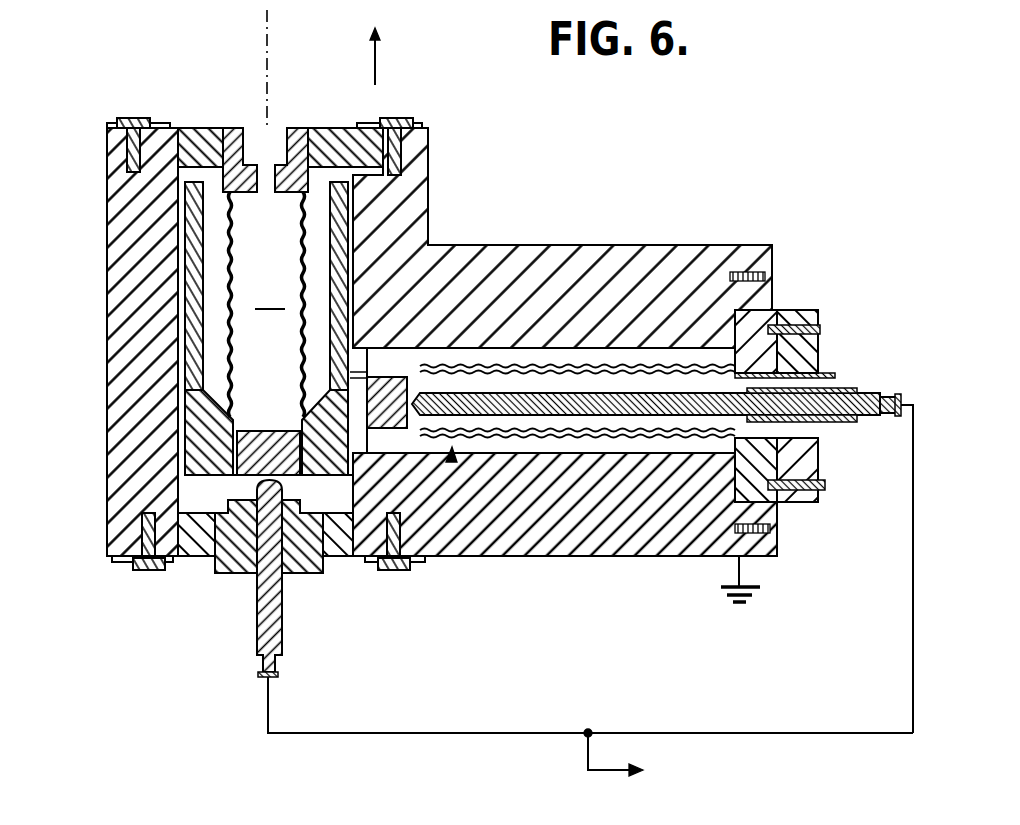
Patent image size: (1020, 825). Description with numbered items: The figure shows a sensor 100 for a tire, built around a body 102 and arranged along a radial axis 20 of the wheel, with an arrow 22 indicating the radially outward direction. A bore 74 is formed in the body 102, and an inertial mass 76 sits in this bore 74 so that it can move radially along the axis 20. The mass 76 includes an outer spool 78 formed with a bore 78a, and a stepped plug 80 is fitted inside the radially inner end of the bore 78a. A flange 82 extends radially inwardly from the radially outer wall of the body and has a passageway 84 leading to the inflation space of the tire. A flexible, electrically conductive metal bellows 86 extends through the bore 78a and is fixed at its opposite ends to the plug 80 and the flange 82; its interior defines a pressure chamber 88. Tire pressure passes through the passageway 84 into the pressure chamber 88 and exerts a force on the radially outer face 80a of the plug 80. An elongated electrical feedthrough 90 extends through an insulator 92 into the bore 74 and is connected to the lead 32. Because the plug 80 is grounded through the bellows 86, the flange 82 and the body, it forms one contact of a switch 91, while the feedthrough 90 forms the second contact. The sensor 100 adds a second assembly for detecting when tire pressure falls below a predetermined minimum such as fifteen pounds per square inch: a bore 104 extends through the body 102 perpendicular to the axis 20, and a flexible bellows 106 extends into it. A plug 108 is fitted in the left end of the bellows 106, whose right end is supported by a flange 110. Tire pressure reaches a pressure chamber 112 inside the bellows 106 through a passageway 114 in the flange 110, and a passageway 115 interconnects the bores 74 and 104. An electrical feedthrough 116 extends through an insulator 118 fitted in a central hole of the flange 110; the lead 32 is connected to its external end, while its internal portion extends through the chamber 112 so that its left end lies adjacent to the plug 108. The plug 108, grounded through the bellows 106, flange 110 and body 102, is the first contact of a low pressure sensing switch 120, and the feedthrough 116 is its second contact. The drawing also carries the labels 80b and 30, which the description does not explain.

The sensor 100 is at (112, 78).
The radial axis 20 is at (268, 66).
The arrow 22 is at (372, 68).
The flange 82 is at (198, 128).
The passageway 84 is at (250, 128).
The bellows 86 is at (228, 225).
The outer spool 78 is at (190, 318).
The bore 78a is at (203, 240).
The pressure chamber 88 is at (270, 297).
The stepped plug 80 is at (187, 488).
The radially outer face 80a is at (233, 408).
The nozzle block lower portion 80b is at (252, 478).
The inertial mass 76 is at (104, 440).
The bore 74 is at (187, 498).
The switch 91 is at (108, 588).
The electrical feedthrough 90 is at (255, 636).
The insulator 92 is at (295, 590).
The body 102 is at (408, 190).
The passageway 115 is at (363, 350).
The plug 108 is at (445, 325).
The bore 104 is at (565, 355).
The flexible bellows 106 is at (662, 372).
The passageway 114 is at (712, 383).
The electrical feedthrough 116 is at (890, 396).
The insulator 118 is at (848, 424).
The flange 110 is at (775, 500).
The low pressure sensing switch 120 is at (451, 462).
The pressure chamber 112 is at (592, 418).
The lead 32 is at (588, 755).
The power supply 30 is at (630, 757).